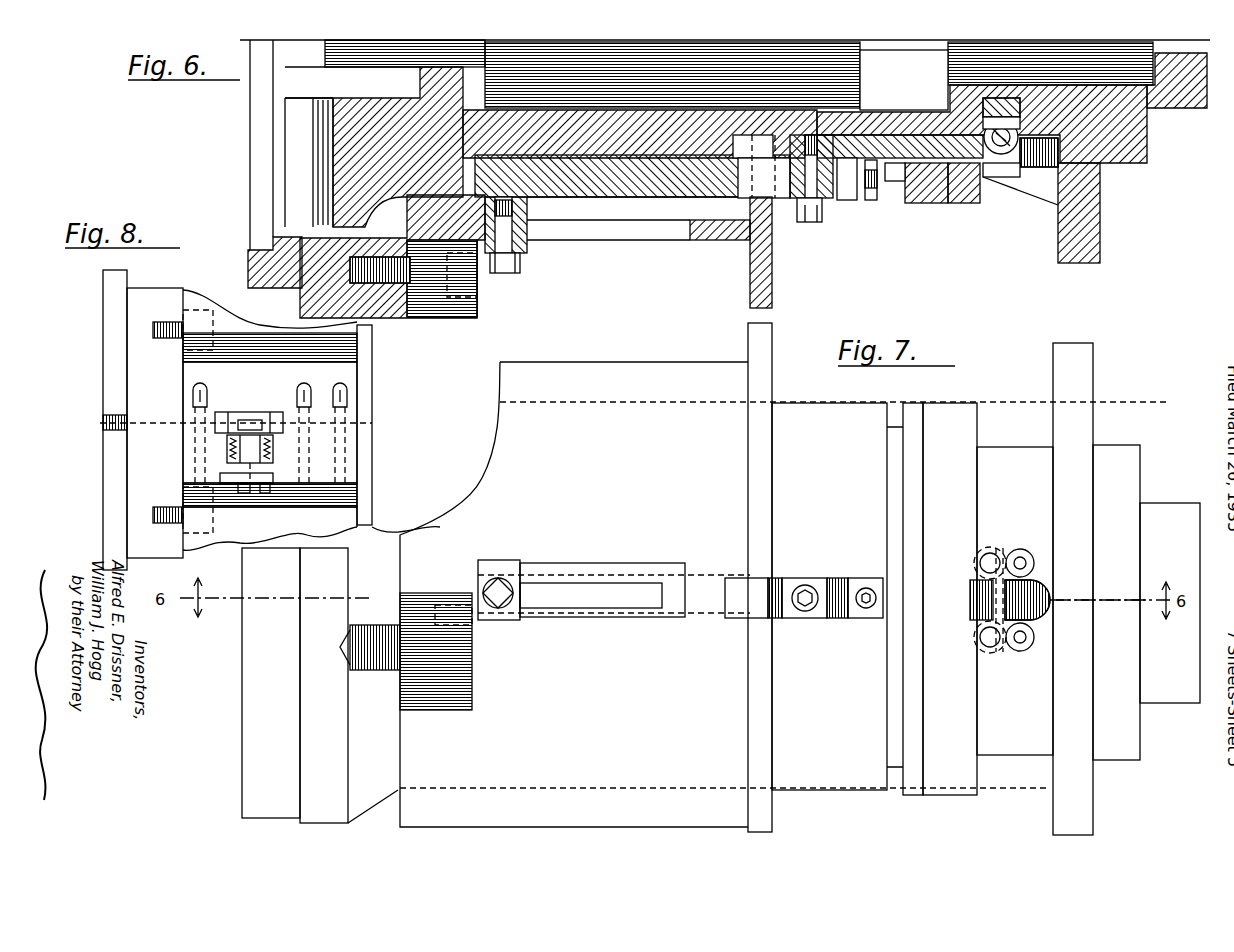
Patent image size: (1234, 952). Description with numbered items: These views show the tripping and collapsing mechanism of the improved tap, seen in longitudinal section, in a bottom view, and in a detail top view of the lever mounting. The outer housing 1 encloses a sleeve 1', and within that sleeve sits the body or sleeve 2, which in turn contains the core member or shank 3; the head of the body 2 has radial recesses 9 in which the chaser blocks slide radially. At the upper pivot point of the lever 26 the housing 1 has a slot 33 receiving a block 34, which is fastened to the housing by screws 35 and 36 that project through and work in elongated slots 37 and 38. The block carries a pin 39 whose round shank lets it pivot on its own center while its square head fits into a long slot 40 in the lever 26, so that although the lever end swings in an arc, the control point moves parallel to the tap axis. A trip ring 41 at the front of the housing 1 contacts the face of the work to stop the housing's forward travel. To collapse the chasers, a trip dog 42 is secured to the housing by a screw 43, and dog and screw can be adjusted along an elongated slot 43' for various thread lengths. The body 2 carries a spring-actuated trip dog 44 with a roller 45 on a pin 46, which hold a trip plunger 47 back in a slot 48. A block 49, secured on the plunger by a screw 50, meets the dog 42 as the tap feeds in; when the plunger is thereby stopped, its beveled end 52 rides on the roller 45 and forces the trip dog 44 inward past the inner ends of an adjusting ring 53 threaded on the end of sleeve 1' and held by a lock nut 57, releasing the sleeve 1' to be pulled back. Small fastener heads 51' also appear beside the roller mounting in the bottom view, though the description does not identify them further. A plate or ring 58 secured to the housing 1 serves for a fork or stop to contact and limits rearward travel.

In FIG. 6, the housing 1 is at (392, 272).
In FIG. 7, the housing 1 is at (785, 594).
In FIG. 8, the housing 1 is at (270, 423).
In FIG. 6, the sleeve 1' is at (729, 205).
In FIG. 7, the sleeve 1' is at (837, 596).
In FIG. 6, the body or sleeve 2 is at (390, 112).
In FIG. 7, the body or sleeve 2 is at (1000, 745).
In FIG. 6, the core member or shank 3 is at (641, 75).
In FIG. 6, the radial recesses 9 is at (325, 160).
In FIG. 8, the lever 26 is at (249, 414).
In FIG. 8, the slot 33 is at (284, 414).
In FIG. 8, the block 34 is at (225, 450).
In FIG. 8, the screw 35 is at (240, 490).
In FIG. 8, the screw 36 is at (264, 484).
In FIG. 8, the elongated slot 37 is at (222, 478).
In FIG. 8, the elongated slot 38 is at (276, 478).
In FIG. 8, the pin 39 is at (250, 470).
In FIG. 8, the long slot 40 is at (259, 422).
In FIG. 6, the trip ring 41 is at (250, 263).
In FIG. 7, the trip ring 41 is at (246, 752).
In FIG. 8, the trip ring 41 is at (106, 447).
In FIG. 6, the trip dog 42 is at (527, 250).
In FIG. 7, the trip dog 42 is at (522, 565).
In FIG. 6, the screw 43 is at (520, 279).
In FIG. 7, the screw 43 is at (439, 611).
In FIG. 6, the elongated slot 43' is at (638, 237).
In FIG. 7, the elongated slot 43' is at (602, 612).
In FIG. 6, the trip dog 44 is at (1060, 172).
In FIG. 6, the roller 45 is at (1022, 100).
In FIG. 7, the roller 45 is at (1043, 580).
In FIG. 6, the pin 46 is at (1010, 130).
In FIG. 7, the pin 46 is at (995, 548).
In FIG. 6, the trip plunger 47 is at (902, 153).
In FIG. 7, the trip plunger 47 is at (768, 600).
In FIG. 6, the slot 48 is at (763, 150).
In FIG. 7, the slot 48 is at (733, 600).
In FIG. 6, the block 49 is at (834, 207).
In FIG. 7, the block 49 is at (805, 606).
In FIG. 6, the screw 50 is at (815, 222).
In FIG. 7, the screw 50 is at (820, 604).
In FIG. 7, the washer 51' is at (1018, 604).
In FIG. 6, the beveled end 52 is at (1022, 160).
In FIG. 6, the adjusting ring 53 is at (967, 205).
In FIG. 7, the adjusting ring 53 is at (950, 599).
In FIG. 6, the lock nut 57 is at (920, 205).
In FIG. 7, the lock nut 57 is at (908, 487).
In FIG. 6, the plate or ring 58 is at (750, 291).
In FIG. 7, the plate or ring 58 is at (758, 340).
In FIG. 8, the plate or ring 58 is at (362, 452).